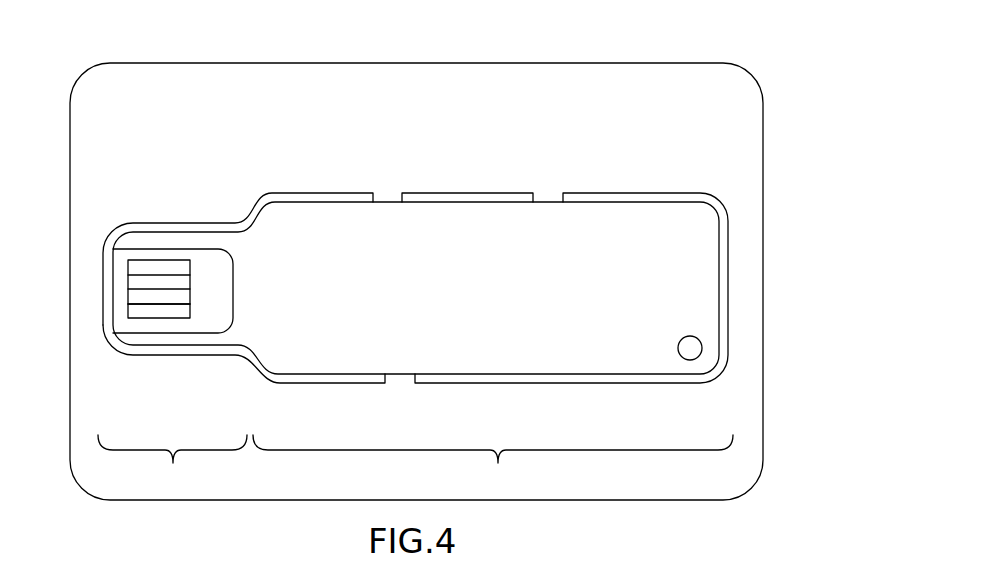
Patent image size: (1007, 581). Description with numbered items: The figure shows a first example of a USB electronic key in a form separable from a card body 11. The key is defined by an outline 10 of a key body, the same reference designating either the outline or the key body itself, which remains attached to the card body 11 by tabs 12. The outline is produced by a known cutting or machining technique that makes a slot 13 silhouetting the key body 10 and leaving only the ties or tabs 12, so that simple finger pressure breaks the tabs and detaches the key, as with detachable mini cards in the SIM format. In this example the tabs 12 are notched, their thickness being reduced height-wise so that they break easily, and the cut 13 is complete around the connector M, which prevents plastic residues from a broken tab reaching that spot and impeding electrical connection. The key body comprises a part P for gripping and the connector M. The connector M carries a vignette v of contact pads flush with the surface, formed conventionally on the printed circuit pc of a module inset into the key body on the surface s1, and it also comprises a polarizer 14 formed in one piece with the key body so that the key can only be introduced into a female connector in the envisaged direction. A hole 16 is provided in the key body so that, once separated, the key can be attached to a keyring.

The outline of key body 10 is at (723, 282).
The card body 11 is at (620, 63).
The tabs 12 is at (550, 197).
The slot 13 is at (645, 198).
The polarizer 14 is at (172, 238).
The surface s1 is at (206, 250).
The vignette of contact pads v is at (128, 270).
The chip pc is at (155, 310).
The hole 16 is at (697, 352).
The connector M is at (172, 465).
The part for gripping P is at (493, 465).